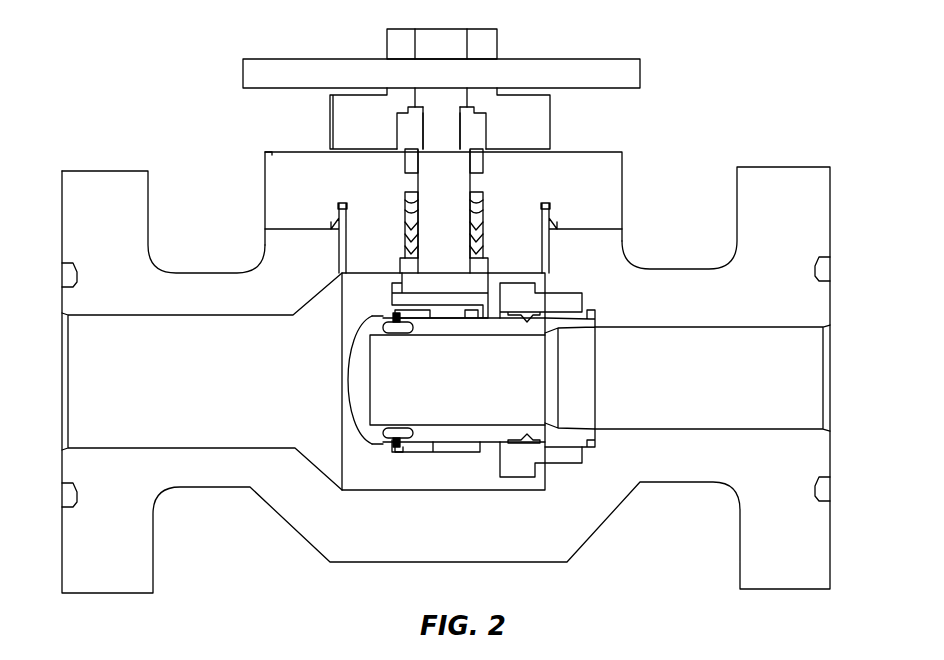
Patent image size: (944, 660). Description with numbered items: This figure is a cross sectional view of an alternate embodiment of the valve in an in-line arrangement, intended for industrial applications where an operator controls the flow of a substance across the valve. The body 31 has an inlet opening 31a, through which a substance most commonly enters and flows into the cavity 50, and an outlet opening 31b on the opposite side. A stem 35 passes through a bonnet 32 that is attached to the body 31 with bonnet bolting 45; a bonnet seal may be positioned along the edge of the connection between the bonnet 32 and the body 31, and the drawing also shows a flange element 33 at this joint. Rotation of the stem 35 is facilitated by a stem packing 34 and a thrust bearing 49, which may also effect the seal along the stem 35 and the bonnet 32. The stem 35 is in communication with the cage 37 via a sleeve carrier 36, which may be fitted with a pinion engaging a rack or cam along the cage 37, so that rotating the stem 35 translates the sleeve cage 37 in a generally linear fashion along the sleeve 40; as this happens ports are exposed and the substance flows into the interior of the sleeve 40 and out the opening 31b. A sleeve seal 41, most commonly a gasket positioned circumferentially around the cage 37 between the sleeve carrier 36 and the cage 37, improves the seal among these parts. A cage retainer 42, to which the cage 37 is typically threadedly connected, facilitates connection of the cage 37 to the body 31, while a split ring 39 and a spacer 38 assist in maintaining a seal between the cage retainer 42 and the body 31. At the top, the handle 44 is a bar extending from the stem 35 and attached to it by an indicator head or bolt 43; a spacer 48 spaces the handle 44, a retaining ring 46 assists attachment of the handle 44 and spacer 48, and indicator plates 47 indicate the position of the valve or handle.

The body 31 is at (68, 180).
The opening 31a is at (67, 396).
The opening 31b is at (831, 392).
The bonnet 32 is at (268, 225).
The cage flange 33 is at (338, 223).
The stem packing 34 is at (408, 231).
The stem 35 is at (432, 199).
The sleeve carrier 36 is at (402, 301).
The cage 37 is at (352, 379).
The spacer 38 is at (574, 440).
The split ring 39 is at (526, 438).
The sleeve 40 is at (400, 451).
The sleeve seal 41 is at (440, 456).
The cage retainer 42 is at (548, 459).
The indicator head or bolt 43 is at (494, 46).
The handle 44 is at (642, 72).
The bonnet bolting 45 is at (270, 155).
The retaining ring 46 is at (468, 106).
The indicator plate 47 is at (331, 131).
The spacer 48 is at (480, 135).
The thrust bearing 49 is at (484, 161).
The cavity 50 is at (438, 481).